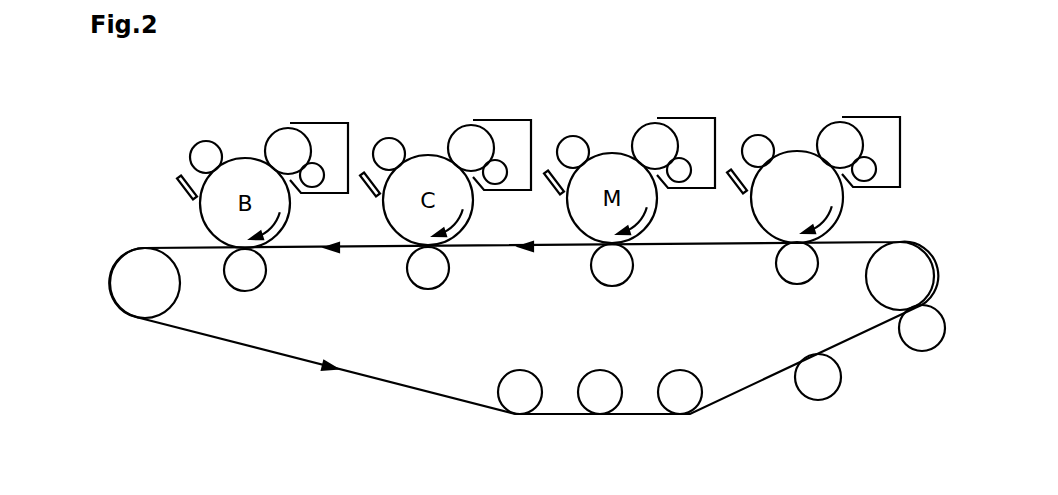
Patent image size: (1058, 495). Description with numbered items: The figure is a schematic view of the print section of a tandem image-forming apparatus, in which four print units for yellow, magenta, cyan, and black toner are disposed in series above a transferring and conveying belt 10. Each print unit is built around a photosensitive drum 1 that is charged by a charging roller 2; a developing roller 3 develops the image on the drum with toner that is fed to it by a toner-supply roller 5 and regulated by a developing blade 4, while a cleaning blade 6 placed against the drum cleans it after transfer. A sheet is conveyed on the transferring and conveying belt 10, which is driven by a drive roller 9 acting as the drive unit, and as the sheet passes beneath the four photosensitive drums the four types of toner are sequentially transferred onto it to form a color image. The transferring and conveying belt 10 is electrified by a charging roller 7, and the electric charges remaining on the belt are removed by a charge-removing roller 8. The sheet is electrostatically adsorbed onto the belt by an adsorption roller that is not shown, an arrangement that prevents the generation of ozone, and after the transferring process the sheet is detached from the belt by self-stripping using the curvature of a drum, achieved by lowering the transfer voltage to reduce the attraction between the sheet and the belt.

The photosensitive drum 1 is at (827, 197).
The charging roller 2 is at (762, 114).
The developing roller 3 is at (838, 112).
The developing blade 4 is at (873, 123).
The toner-supply roller 5 is at (896, 157).
The cleaning blade 6 is at (731, 248).
The charging roller 7 is at (922, 365).
The charge-removing roller 8 is at (819, 414).
The drive roller 9 is at (145, 343).
The transferring and conveying belt 10 is at (523, 328).